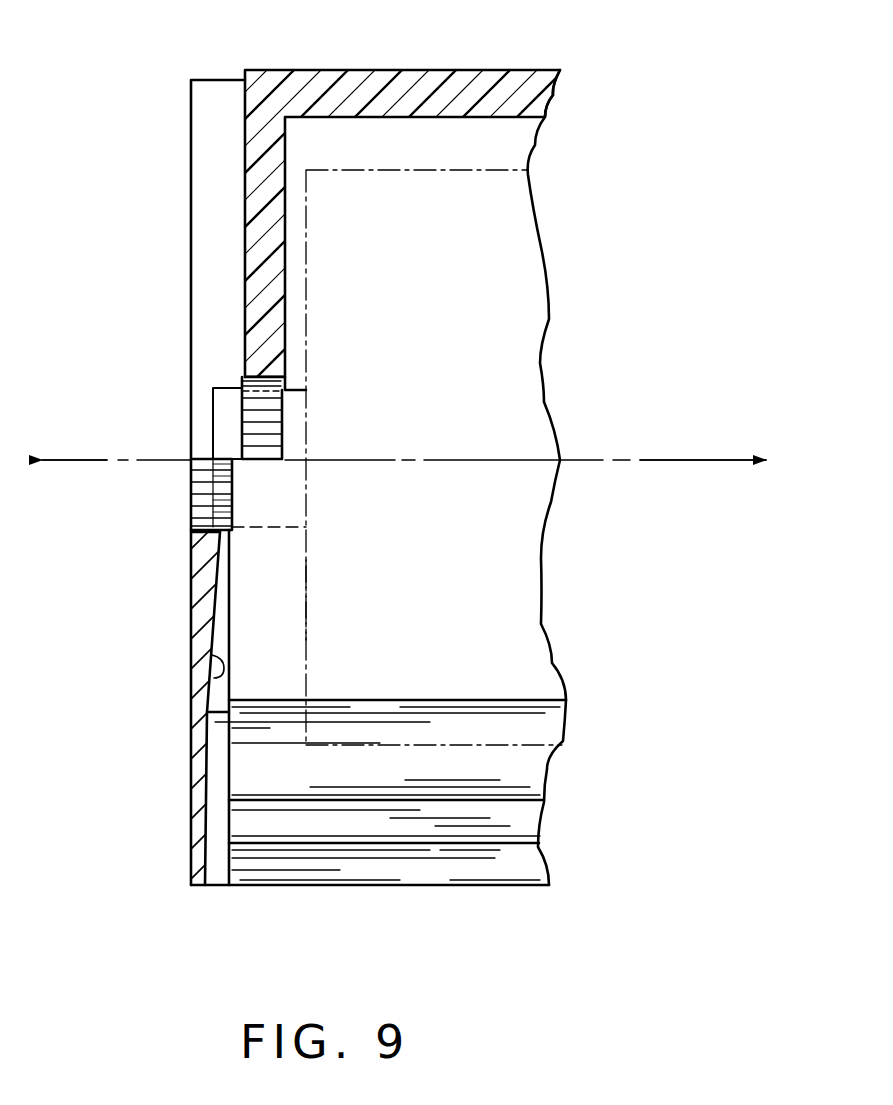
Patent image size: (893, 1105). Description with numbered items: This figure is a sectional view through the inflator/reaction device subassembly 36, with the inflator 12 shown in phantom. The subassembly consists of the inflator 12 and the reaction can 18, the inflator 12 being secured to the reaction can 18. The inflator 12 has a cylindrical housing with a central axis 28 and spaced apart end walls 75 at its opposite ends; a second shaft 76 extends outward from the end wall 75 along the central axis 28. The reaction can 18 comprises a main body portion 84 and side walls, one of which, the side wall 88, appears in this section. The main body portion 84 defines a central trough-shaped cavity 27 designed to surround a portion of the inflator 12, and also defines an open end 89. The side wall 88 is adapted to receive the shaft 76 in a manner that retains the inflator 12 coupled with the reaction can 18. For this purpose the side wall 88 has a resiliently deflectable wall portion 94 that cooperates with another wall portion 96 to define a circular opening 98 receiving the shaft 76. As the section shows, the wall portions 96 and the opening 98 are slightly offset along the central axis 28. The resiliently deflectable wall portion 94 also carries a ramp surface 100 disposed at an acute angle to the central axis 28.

The inflator 12 is at (300, 199).
The reaction can 18 is at (327, 90).
The central trough-shaped cavity 27 is at (288, 582).
The central axis 28 is at (597, 460).
The inflator/reaction device subassembly 36 is at (166, 117).
The end wall 75 is at (300, 598).
The second shaft 76 is at (222, 410).
The main body portion 84 is at (355, 770).
The side wall 88 is at (205, 645).
The open end 89 is at (472, 145).
The resiliently deflectable wall portion 94 is at (198, 547).
The wall portion 96 is at (262, 272).
The circular opening 98 is at (256, 437).
The ramp surface 100 is at (212, 670).